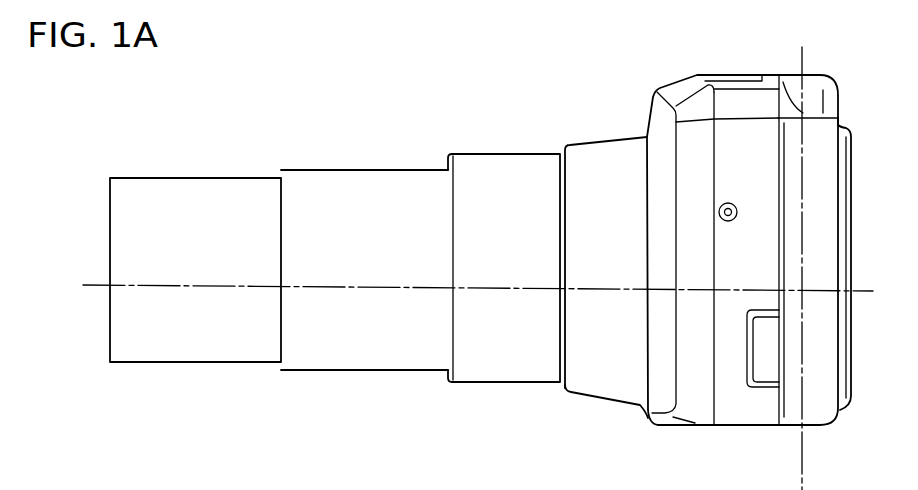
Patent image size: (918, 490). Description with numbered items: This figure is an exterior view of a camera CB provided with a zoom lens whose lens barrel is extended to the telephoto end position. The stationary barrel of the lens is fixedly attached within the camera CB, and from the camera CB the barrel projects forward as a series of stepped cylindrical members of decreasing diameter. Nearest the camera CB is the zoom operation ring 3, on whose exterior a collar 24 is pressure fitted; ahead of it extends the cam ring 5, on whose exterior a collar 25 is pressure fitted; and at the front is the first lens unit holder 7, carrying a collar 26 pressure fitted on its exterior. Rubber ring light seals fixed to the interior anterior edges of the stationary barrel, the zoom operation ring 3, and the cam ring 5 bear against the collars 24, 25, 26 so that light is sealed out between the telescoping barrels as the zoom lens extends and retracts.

The first lens unit holder 7 is at (195, 329).
The collar 26 is at (237, 362).
The cam ring 5 is at (364, 325).
The collar 25 is at (365, 370).
The zoom operation ring 3 is at (504, 317).
The collar 24 is at (499, 382).
The camera CB is at (720, 425).